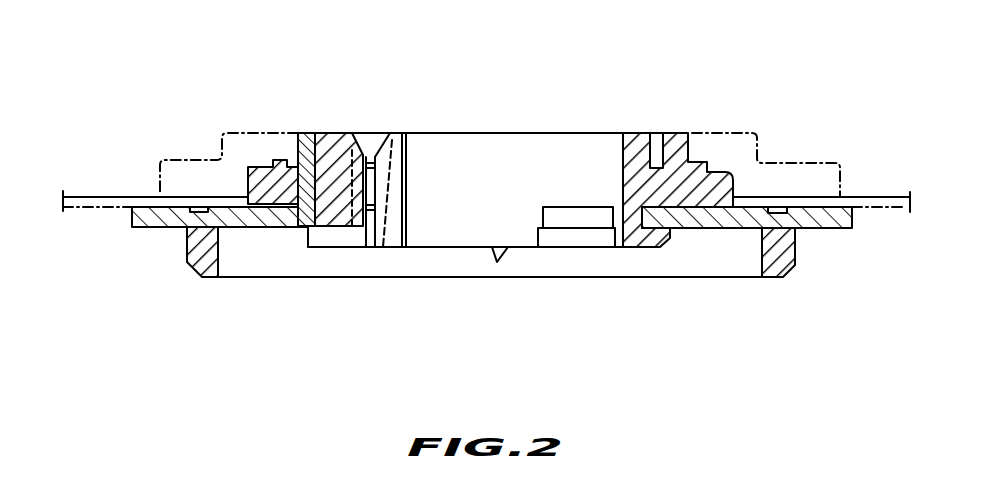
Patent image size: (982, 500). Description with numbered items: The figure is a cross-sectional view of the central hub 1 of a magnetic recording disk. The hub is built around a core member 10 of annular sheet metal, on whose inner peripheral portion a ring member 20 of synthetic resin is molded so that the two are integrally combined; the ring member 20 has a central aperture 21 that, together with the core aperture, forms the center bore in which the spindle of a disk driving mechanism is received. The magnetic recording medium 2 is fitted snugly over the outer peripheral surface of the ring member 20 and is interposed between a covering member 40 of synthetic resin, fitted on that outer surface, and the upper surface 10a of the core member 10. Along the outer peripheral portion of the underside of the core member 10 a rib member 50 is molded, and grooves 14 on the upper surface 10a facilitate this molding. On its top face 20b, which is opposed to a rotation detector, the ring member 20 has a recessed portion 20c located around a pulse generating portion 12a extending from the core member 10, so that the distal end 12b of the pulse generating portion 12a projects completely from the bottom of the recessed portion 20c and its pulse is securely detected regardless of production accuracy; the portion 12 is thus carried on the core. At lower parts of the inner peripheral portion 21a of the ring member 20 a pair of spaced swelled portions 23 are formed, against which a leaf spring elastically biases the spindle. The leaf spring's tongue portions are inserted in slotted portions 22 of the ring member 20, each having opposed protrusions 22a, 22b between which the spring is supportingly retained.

The central hub 1 is at (528, 278).
The magnetic recording medium 2 is at (78, 195).
The core member 10 is at (150, 228).
The upper surface of the core member 10a is at (722, 228).
The inner fixed member 12 is at (292, 194).
The pulse generating portion 12a is at (286, 157).
The distal end of the pulse generating portion 12b is at (312, 133).
The grooves 14 is at (199, 212).
The ring member 20 is at (524, 146).
The top face of the ring member 20b is at (343, 133).
The recessed portion 20c is at (328, 133).
The central aperture of the ring member 21 is at (512, 205).
The inner peripheral portion of the ring member 21a is at (466, 238).
The slotted portions 22 is at (387, 191).
The protrusion 22a is at (383, 252).
The protrusion 22b is at (366, 250).
The swelled portions 23 is at (593, 240).
The covering member 40 is at (253, 133).
The rib member 50 is at (210, 275).